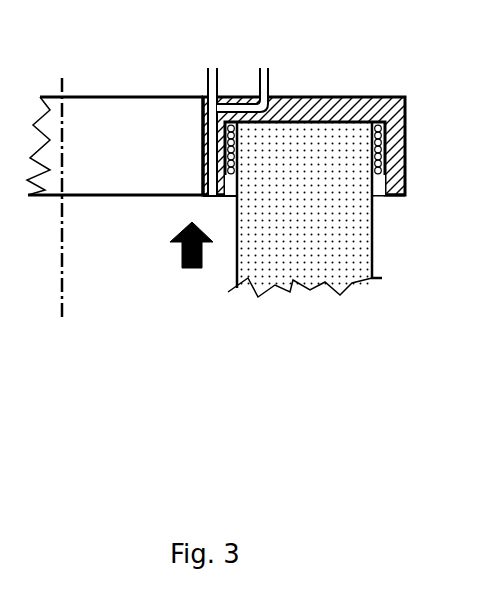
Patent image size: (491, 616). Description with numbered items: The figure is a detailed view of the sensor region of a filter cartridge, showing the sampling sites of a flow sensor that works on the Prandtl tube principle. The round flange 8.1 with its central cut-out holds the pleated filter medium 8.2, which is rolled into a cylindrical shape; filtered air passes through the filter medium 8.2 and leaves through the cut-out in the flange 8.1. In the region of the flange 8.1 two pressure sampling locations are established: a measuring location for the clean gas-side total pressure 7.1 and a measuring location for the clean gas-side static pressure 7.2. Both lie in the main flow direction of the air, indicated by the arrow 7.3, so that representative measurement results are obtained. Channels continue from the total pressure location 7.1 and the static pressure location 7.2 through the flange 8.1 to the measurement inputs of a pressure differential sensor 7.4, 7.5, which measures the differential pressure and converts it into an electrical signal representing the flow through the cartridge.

The measuring location for the clean gas-side total pressure 7.1 is at (213, 203).
The measuring location for the clean gas-side static pressure 7.2 is at (197, 112).
The arrow 7.3 is at (208, 268).
The pressure differential sensor 7.4 is at (202, 67).
The pressure differential sensor 7.5 is at (272, 82).
The flange 8.1 is at (327, 105).
The filter medium 8.2 is at (342, 200).